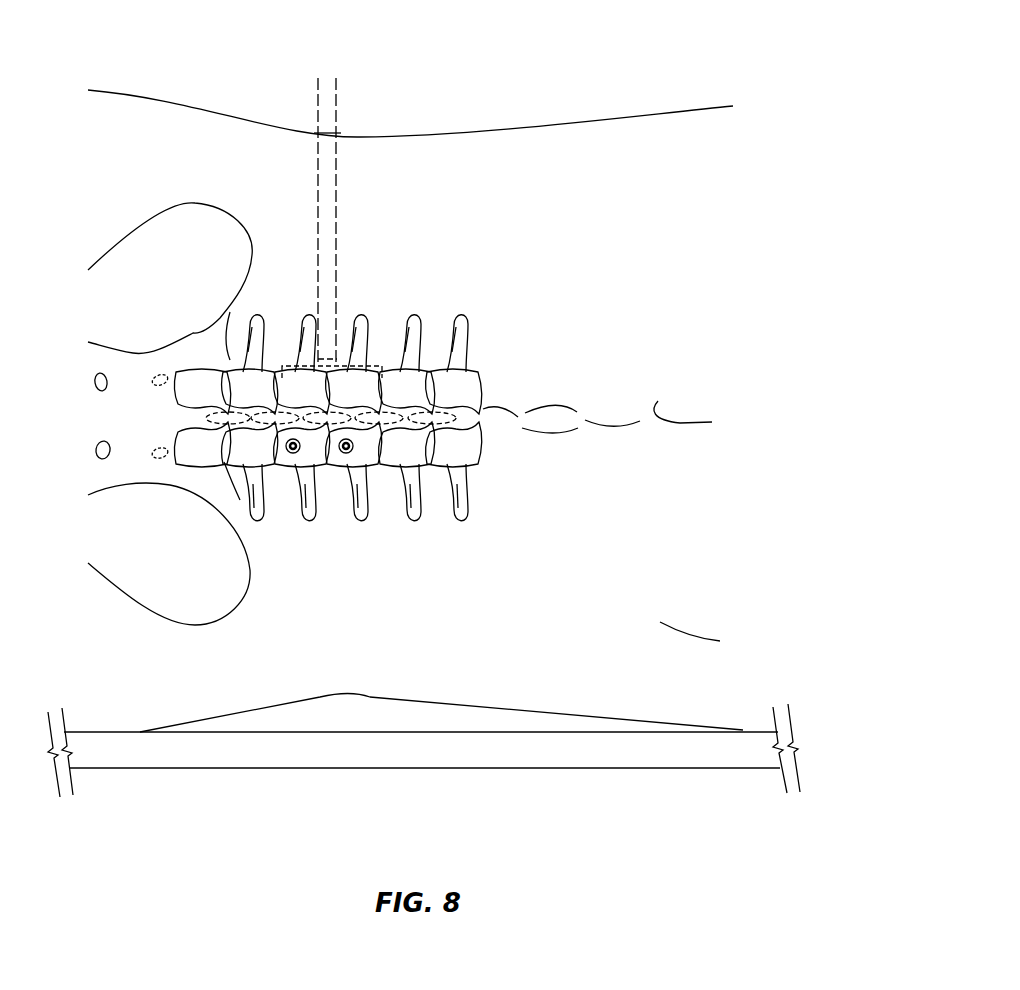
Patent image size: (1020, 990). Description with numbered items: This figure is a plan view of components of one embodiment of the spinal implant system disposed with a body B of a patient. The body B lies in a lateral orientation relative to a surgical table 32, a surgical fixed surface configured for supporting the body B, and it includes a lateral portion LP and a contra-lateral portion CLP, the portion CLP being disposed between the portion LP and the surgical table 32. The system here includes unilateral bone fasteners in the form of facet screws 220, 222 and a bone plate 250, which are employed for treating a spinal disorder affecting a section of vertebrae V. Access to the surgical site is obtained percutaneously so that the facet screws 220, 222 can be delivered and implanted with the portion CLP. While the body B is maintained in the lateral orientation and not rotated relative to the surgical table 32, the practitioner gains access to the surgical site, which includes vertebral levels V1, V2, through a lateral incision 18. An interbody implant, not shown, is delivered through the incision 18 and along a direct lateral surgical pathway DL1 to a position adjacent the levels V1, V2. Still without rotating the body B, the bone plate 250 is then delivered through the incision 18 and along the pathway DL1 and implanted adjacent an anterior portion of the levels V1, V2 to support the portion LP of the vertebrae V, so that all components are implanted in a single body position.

The lateral incision 18 is at (327, 130).
The direct lateral surgical pathway DL1 is at (345, 99).
The lateral portion LP is at (608, 153).
The body B is at (710, 232).
The vertebrae V is at (443, 418).
The vertebral level V1 is at (345, 463).
The vertebral level V2 is at (297, 463).
The facet screw 220 is at (349, 450).
The facet screw 222 is at (296, 450).
The bone plate 250 is at (339, 366).
The contra-lateral portion CLP is at (720, 641).
The surgical table 32 is at (723, 755).